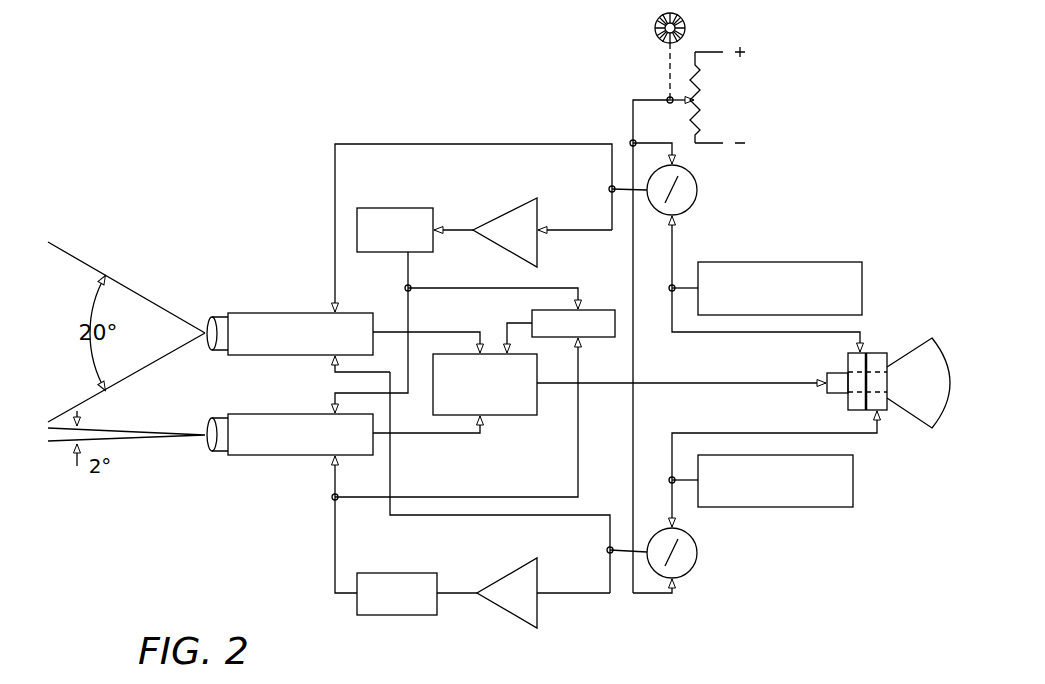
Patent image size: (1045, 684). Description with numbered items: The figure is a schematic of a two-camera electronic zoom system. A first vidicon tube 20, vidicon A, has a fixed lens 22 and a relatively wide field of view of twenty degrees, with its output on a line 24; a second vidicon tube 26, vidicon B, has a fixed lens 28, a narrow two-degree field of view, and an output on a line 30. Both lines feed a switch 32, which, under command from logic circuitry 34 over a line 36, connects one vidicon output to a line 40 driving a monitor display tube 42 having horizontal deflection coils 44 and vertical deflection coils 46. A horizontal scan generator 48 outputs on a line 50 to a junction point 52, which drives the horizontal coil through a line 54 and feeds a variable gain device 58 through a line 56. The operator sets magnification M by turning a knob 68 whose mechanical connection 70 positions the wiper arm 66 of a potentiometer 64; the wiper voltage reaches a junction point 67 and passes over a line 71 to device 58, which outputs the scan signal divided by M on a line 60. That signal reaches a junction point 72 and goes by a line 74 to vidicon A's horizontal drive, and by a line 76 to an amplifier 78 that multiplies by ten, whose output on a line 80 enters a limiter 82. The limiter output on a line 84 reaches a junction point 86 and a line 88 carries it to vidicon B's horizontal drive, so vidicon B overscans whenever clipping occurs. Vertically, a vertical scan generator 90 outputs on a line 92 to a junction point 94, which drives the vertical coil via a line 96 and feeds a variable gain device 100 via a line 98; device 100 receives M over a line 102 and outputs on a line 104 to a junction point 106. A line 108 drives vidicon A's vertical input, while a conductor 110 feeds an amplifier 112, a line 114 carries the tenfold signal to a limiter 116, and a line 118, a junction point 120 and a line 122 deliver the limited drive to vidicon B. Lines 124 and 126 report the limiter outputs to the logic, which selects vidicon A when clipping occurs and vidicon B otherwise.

The first vidicon tube 20 is at (300, 313).
The fixed lens 22 is at (209, 318).
The line 24 is at (455, 332).
The second vidicon tube 26 is at (250, 458).
The fixed lens 28 is at (209, 420).
The line 30 is at (432, 434).
The switch 32 is at (520, 416).
The logic circuitry 34 is at (602, 310).
The line 36 is at (525, 323).
The line 40 is at (670, 383).
The monitor display tube 42 is at (930, 340).
The horizontal deflection coils 44 is at (848, 402).
The vertical deflection coils 46 is at (888, 400).
The horizontal scan generator 48 is at (788, 262).
The line 50 is at (690, 285).
The junction point 52 is at (668, 288).
The line 54 is at (745, 333).
The line 56 is at (678, 236).
The variable gain device 58 is at (697, 183).
The line 60 is at (628, 155).
The potentiometer 64 is at (700, 90).
The wiper arm 66 is at (668, 98).
The junction point 67 is at (632, 140).
The knob 68 is at (686, 29).
The mechanical connection 70 is at (668, 57).
The line 71 is at (646, 142).
The junction point 72 is at (609, 189).
The line 74 is at (418, 144).
The line 76 is at (578, 229).
The amplifier 78 is at (500, 216).
The line 80 is at (465, 229).
The limiter 82 is at (363, 208).
The line 84 is at (406, 270).
The junction point 86 is at (405, 289).
The line 88 is at (389, 372).
The vertical scan generator 90 is at (792, 507).
The line 92 is at (692, 490).
The junction point 94 is at (668, 480).
The line 96 is at (755, 433).
The line 98 is at (668, 522).
The variable gain device 100 is at (698, 553).
The line 102 is at (672, 594).
The line 104 is at (627, 560).
The junction point 106 is at (607, 550).
The line 108 is at (490, 516).
The conductor 110 is at (565, 594).
The amplifier 112 is at (508, 576).
The line 114 is at (470, 594).
The limiter 116 is at (410, 573).
The line 118 is at (335, 540).
The junction point 120 is at (332, 497).
The line 122 is at (333, 481).
The line 124 is at (450, 288).
The line 126 is at (578, 455).